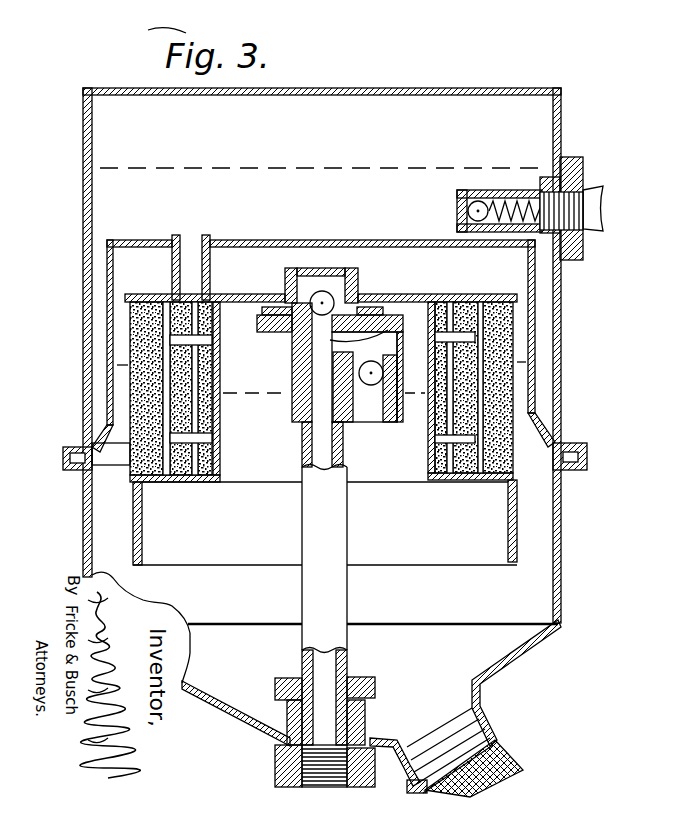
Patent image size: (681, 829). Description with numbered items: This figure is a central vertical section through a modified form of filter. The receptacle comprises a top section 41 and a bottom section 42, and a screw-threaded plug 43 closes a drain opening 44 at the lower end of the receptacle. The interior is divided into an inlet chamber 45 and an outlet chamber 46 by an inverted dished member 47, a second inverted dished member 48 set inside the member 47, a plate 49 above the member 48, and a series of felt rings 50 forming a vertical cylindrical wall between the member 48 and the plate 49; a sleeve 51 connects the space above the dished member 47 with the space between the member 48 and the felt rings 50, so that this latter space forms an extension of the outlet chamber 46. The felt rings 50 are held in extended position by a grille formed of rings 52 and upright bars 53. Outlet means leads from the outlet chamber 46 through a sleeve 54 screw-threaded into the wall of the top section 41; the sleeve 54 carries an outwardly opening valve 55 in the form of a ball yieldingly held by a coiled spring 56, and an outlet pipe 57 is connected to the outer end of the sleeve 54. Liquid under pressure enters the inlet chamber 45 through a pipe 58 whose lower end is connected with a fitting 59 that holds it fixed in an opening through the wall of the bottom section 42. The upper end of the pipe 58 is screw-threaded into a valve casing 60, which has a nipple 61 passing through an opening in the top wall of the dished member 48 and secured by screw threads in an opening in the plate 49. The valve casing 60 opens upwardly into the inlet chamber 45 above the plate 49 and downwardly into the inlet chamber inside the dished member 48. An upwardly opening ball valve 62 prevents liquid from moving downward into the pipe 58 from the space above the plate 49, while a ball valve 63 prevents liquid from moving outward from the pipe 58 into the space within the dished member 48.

The top section 41 is at (85, 215).
The bottom section 42 is at (565, 515).
The screw-threaded plug 43 is at (455, 737).
The drain opening 44 is at (475, 745).
The inlet chamber 45 is at (542, 567).
The outlet chamber 46 is at (512, 110).
The inverted dished member 47 is at (290, 240).
The second inverted dished member 48 is at (255, 472).
The plate 49 is at (258, 294).
The felt rings 50 is at (138, 363).
The sleeve 51 is at (197, 245).
The rings 52 is at (460, 330).
The upright bars 53 is at (440, 305).
The sleeve 54 is at (495, 190).
The outwardly opening valve 55 is at (477, 200).
The coiled spring 56 is at (522, 190).
The outlet pipe 57 is at (600, 207).
The pipe 58 is at (317, 595).
The fitting 59 is at (290, 768).
The valve casing 60 is at (300, 403).
The nipple 61 is at (356, 286).
The ball valve 62 is at (323, 292).
The ball valve 63 is at (372, 367).